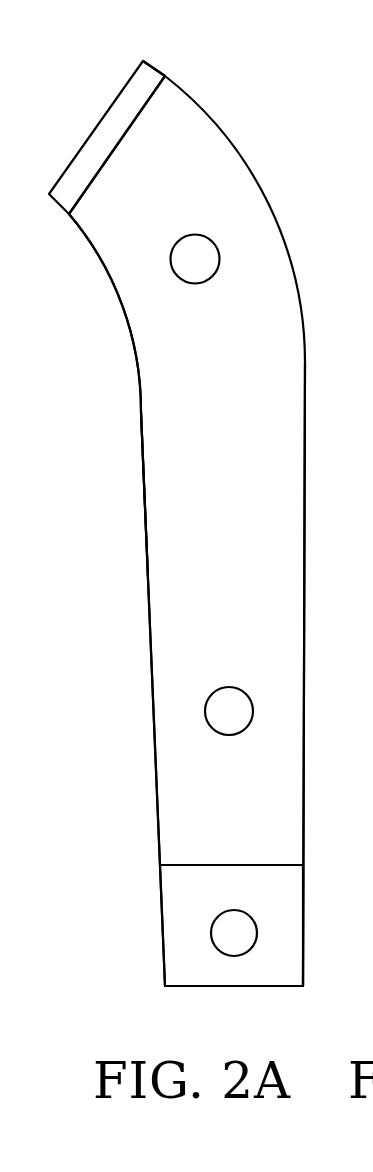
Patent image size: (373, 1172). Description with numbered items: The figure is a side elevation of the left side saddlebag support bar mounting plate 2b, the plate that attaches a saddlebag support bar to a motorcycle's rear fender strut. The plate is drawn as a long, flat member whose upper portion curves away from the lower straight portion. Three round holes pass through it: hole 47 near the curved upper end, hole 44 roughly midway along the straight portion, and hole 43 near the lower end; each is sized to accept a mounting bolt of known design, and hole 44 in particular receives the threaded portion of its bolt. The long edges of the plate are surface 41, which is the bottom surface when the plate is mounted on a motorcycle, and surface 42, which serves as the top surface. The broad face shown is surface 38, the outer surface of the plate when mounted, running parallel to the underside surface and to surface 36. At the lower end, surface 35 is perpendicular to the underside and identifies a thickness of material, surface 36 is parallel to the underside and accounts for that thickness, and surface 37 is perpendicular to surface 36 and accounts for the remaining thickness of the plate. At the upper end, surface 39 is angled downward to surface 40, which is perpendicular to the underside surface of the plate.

The left side saddlebag support bar mounting plate 2b is at (283, 327).
The surface 35 is at (222, 987).
The surface 36 is at (193, 899).
The surface 37 is at (207, 866).
The surface 38 is at (213, 477).
The surface 39 is at (143, 84).
The surface 40 is at (108, 108).
The surface 41 is at (138, 393).
The surface 42 is at (307, 380).
The hole 43 is at (233, 936).
The hole 44 is at (217, 711).
The hole 47 is at (196, 260).